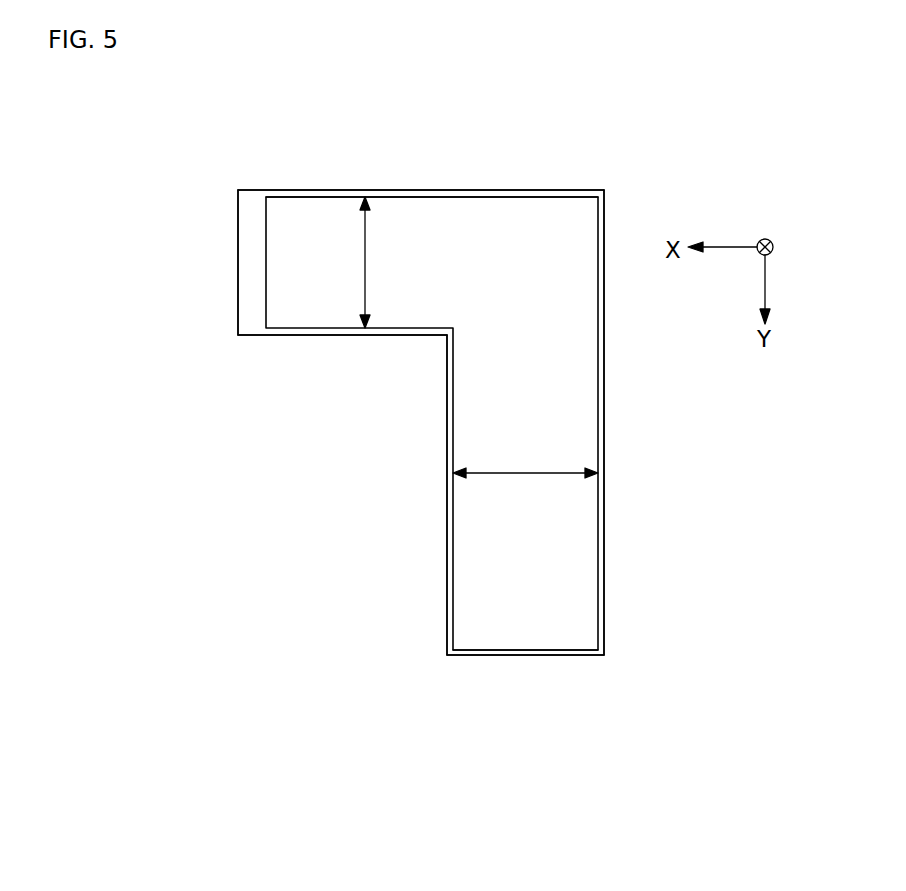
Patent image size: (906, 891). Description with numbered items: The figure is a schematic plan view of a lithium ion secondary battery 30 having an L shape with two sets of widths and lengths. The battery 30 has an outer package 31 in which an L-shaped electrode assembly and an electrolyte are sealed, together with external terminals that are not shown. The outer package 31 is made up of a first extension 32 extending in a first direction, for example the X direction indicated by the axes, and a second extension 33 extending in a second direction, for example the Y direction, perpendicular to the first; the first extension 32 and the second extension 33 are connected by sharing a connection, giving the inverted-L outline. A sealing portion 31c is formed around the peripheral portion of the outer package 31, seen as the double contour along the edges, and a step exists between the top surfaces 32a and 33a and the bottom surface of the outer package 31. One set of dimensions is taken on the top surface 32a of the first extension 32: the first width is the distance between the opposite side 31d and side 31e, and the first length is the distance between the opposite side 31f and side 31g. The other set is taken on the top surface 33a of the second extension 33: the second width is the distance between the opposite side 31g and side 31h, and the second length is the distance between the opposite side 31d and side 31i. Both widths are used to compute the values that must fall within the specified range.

The lithium ion secondary battery 30 is at (615, 155).
The outer package 31 is at (231, 438).
The first extension 32 is at (312, 308).
The second extension 33 is at (465, 556).
The sealing portion 31c is at (252, 197).
The side 31d is at (393, 197).
The side 31e is at (397, 330).
The side 31f is at (266, 263).
The side 31g is at (600, 378).
The side 31h is at (448, 612).
The side 31i is at (523, 655).
The top surface 32a is at (465, 213).
The top surface 33a is at (570, 613).